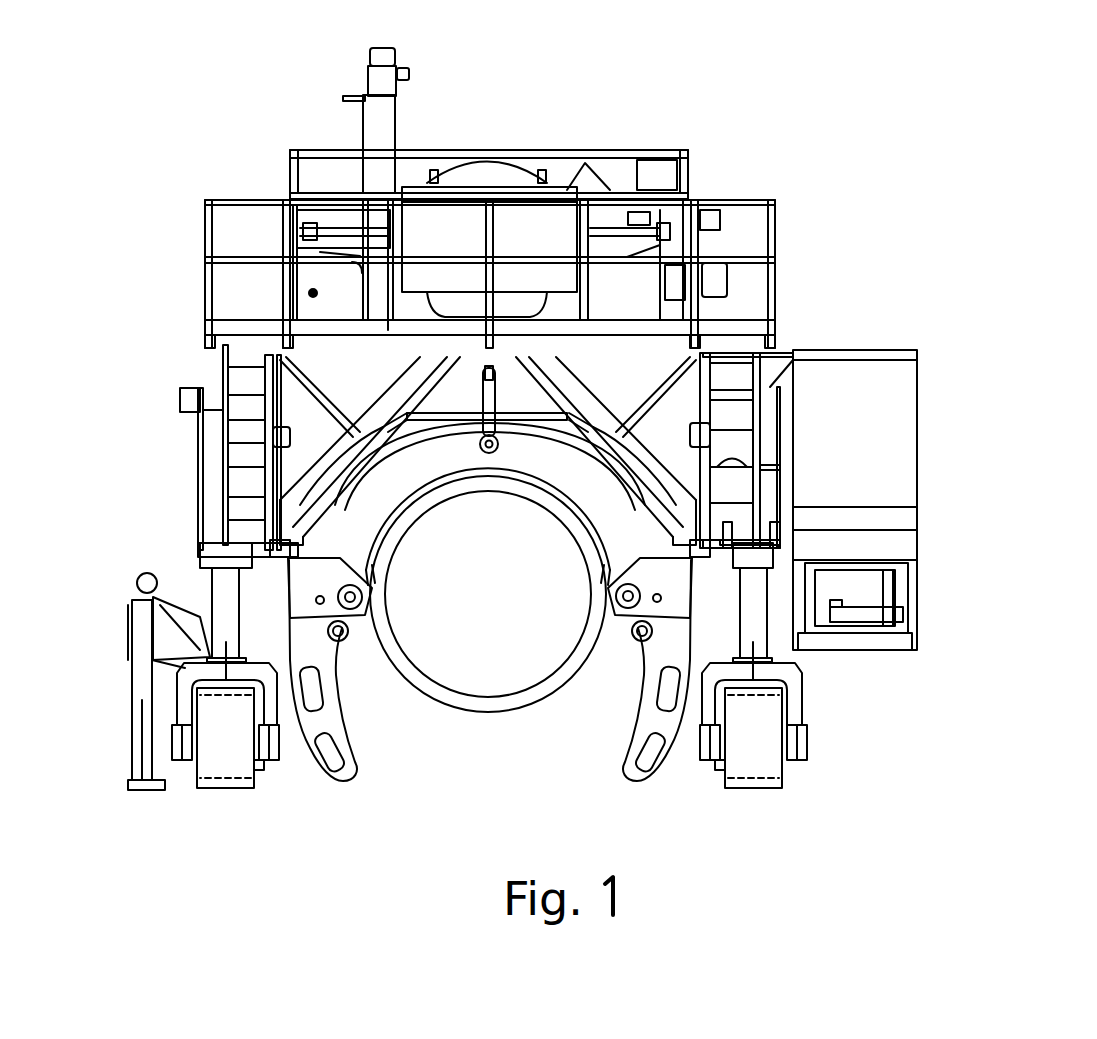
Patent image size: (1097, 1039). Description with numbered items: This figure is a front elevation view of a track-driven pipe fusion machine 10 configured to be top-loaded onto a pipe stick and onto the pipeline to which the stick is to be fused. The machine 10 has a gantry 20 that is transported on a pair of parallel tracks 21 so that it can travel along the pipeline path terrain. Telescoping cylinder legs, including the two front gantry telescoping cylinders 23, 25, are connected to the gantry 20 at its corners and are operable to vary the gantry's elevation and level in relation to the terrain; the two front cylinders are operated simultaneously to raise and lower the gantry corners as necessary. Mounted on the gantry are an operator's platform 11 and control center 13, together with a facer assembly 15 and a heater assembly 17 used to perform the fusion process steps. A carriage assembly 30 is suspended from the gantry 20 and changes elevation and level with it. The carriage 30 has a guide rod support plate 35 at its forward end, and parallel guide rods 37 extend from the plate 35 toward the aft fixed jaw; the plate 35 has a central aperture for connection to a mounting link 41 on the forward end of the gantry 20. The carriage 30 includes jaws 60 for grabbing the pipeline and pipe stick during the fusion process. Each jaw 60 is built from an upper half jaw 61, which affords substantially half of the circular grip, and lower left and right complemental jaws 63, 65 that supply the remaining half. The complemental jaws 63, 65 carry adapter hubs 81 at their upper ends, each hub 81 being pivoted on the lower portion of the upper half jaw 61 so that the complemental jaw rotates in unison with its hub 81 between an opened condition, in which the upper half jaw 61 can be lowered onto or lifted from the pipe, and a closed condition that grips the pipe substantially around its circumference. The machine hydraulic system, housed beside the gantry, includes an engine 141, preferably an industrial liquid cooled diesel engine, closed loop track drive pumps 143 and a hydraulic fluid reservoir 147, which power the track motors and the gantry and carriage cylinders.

The track-driven pipe fusion machine 10 is at (946, 186).
The operator's platform 11 is at (240, 313).
The control center 13 is at (552, 190).
The facer assembly 15 is at (392, 130).
The heater assembly 17 is at (497, 180).
The gantry 20 is at (207, 440).
The tracks 21 is at (205, 770).
The telescoping cylinder leg 23 is at (768, 600).
The telescoping cylinder leg 25 is at (222, 600).
The carriage assembly 30 is at (390, 490).
The guide rod support plate 35 is at (563, 475).
The guide rods 37 is at (363, 597).
The mounting link 41 is at (485, 408).
The jaw 60 is at (350, 628).
The upper half jaw 61 is at (590, 538).
The lower left complemental jaw 63 is at (643, 730).
The lower right complemental jaw 65 is at (340, 733).
The adapter hub 81 is at (307, 622).
The engine 141 is at (918, 385).
The closed loop track drive pumps 143 is at (915, 520).
The hydraulic fluid reservoir 147 is at (903, 615).